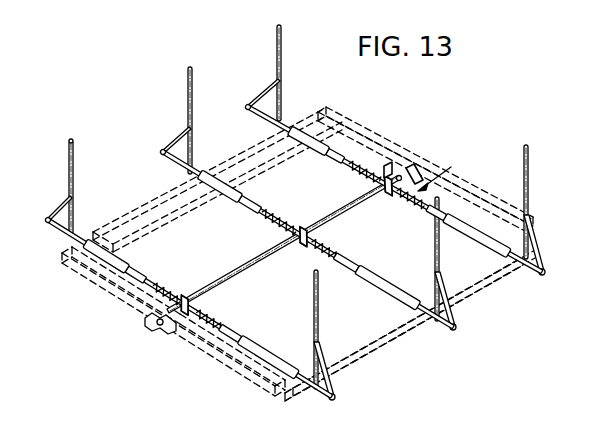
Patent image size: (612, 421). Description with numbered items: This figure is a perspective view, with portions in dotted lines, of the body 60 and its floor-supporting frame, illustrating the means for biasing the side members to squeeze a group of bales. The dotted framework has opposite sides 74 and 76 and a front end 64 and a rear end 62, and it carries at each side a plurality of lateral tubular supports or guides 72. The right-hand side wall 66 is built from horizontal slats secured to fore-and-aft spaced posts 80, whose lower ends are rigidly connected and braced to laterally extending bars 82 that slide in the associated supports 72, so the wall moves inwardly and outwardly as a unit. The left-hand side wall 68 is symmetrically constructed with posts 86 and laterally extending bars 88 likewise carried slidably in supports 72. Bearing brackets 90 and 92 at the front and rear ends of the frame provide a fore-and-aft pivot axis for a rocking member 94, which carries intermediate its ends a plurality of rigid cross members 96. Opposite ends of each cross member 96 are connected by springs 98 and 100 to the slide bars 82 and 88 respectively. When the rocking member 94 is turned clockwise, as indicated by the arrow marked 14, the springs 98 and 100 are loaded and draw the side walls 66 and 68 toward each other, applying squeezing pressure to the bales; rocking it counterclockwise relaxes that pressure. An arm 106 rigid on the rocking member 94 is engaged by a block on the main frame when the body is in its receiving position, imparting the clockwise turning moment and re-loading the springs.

The view indicator 14 is at (448, 167).
The body 60 is at (97, 292).
The rear end 62 is at (208, 358).
The front end 64 is at (341, 118).
The right-hand side wall 66 is at (529, 168).
The left-hand side wall 68 is at (69, 170).
The lateral tubular support 72 is at (110, 260).
The side of floor-supporting frame 74 is at (470, 282).
The side of floor-supporting frame 76 is at (152, 205).
The post 80 is at (529, 196).
The laterally extending bar 82 is at (545, 270).
The post 86 is at (280, 32).
The laterally extending bar 88 is at (161, 154).
The bearing bracket 90 is at (410, 167).
The bearing bracket 92 is at (152, 326).
The rocking member 94 is at (238, 272).
The cross member 96 is at (188, 296).
The spring 98 is at (214, 321).
The spring 100 is at (158, 282).
The arm 106 is at (398, 156).